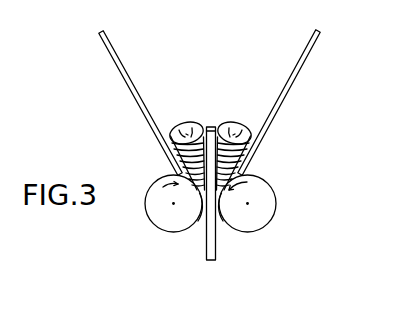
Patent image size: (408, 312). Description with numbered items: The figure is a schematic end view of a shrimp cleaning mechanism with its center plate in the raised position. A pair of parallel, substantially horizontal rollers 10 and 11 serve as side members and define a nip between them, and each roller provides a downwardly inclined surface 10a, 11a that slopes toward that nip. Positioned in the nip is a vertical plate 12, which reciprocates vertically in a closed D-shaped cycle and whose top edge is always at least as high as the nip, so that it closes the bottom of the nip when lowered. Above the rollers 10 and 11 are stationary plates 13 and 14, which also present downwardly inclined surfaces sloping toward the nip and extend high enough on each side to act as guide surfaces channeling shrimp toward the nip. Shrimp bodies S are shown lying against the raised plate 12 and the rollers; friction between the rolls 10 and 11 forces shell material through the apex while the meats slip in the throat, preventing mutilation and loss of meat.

The roller 10 is at (157, 212).
The roller 11 is at (269, 213).
The downwardly inclined surface 10a is at (202, 209).
The downwardly inclined surface 11a is at (218, 212).
The vertical plate 12 is at (217, 248).
The stationary plate 13 is at (128, 90).
The stationary plate 14 is at (287, 95).
The shrimp bodies S is at (187, 123).